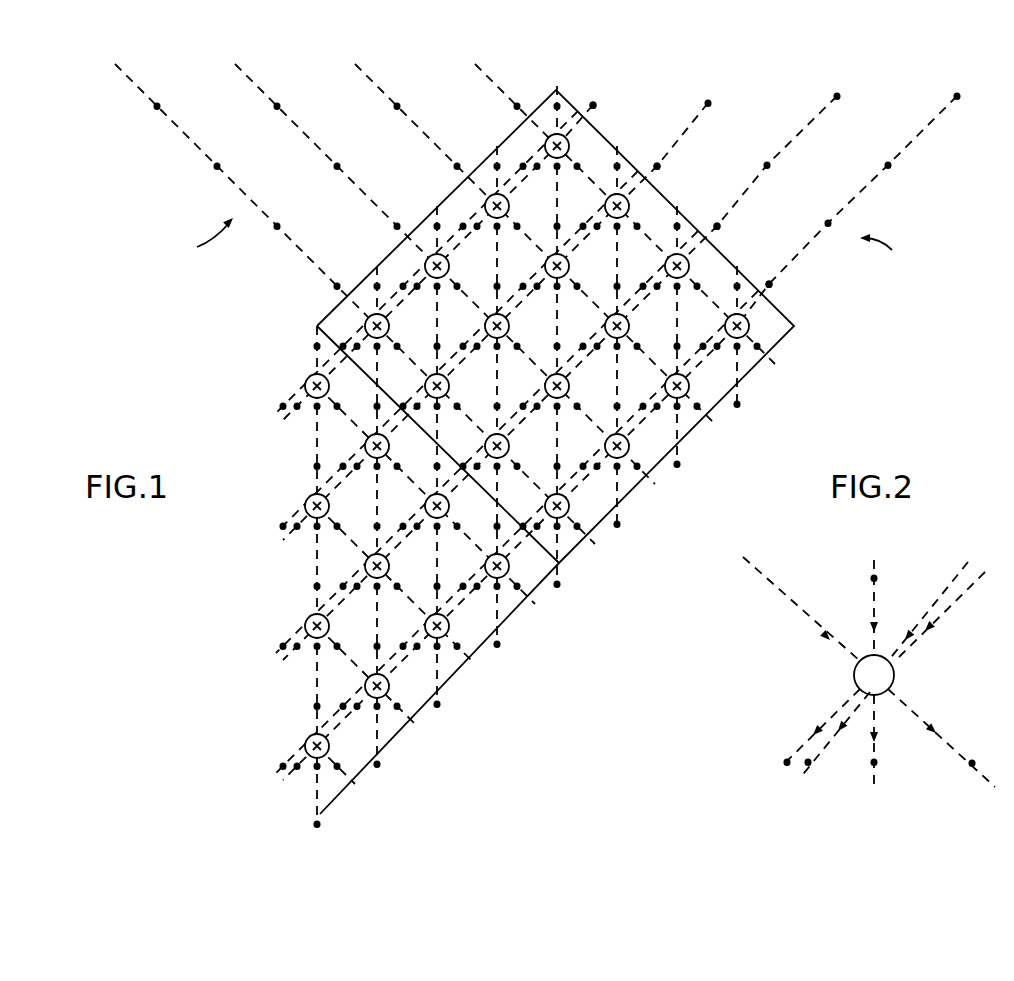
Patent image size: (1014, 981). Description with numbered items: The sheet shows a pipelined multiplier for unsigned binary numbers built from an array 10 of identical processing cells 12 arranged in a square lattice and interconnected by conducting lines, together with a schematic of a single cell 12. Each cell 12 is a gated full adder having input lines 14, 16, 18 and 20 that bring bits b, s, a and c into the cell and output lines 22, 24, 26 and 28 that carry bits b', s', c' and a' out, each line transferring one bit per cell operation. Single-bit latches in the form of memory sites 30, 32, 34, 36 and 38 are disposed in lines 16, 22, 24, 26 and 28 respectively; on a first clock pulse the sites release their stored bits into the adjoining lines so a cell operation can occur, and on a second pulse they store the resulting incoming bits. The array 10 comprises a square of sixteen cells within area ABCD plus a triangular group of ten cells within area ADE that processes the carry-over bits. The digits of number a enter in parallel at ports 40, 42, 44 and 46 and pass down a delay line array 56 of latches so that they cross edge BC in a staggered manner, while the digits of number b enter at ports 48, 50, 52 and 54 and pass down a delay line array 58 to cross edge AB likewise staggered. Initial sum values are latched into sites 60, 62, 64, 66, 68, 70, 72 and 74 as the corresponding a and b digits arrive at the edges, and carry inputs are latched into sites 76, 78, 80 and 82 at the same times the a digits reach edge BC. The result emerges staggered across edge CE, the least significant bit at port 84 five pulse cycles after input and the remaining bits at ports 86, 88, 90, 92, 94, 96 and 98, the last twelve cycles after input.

In FIG. 1, the array 10 is at (300, 437).
In FIG. 1, the processing cell 12 is at (362, 442).
In FIG. 2, the processing cell 12 is at (895, 675).
In FIG. 2, the input line 14 is at (744, 560).
In FIG. 2, the input line 16 is at (874, 562).
In FIG. 2, the input line 18 is at (958, 575).
In FIG. 2, the input line 20 is at (955, 604).
In FIG. 2, the output line 22 is at (994, 788).
In FIG. 2, the output line 24 is at (876, 781).
In FIG. 2, the output line 26 is at (798, 779).
In FIG. 2, the output line 28 is at (780, 768).
In FIG. 2, the memory site 30 is at (877, 576).
In FIG. 2, the memory site 32 is at (973, 762).
In FIG. 2, the memory site 34 is at (878, 762).
In FIG. 2, the memory site 36 is at (811, 763).
In FIG. 2, the memory site 38 is at (784, 761).
In FIG. 1, the port 40 is at (469, 251).
In FIG. 1, the port 42 is at (525, 310).
In FIG. 1, the port 44 is at (588, 370).
In FIG. 1, the port 46 is at (623, 434).
In FIG. 1, the port 48 is at (515, 107).
In FIG. 1, the port 50 is at (395, 107).
In FIG. 1, the port 52 is at (275, 107).
In FIG. 1, the port 54 is at (155, 107).
In FIG. 1, the delay line array 56 is at (885, 245).
In FIG. 1, the delay line array 58 is at (204, 238).
In FIG. 1, the site 60 is at (725, 277).
In FIG. 1, the site 62 is at (665, 219).
In FIG. 1, the site 64 is at (605, 162).
In FIG. 1, the site 66 is at (545, 115).
In FIG. 1, the site 68 is at (485, 176).
In FIG. 1, the site 70 is at (425, 233).
In FIG. 1, the site 72 is at (365, 293).
In FIG. 1, the site 74 is at (306, 339).
In FIG. 1, the site 76 is at (781, 293).
In FIG. 1, the site 78 is at (728, 232).
In FIG. 1, the site 80 is at (666, 170).
In FIG. 1, the site 82 is at (604, 112).
In FIG. 1, the port 84 is at (726, 394).
In FIG. 1, the port 86 is at (666, 454).
In FIG. 1, the port 88 is at (606, 514).
In FIG. 1, the port 90 is at (546, 574).
In FIG. 1, the port 92 is at (486, 634).
In FIG. 1, the port 94 is at (426, 694).
In FIG. 1, the port 96 is at (366, 754).
In FIG. 1, the port 98 is at (323, 807).